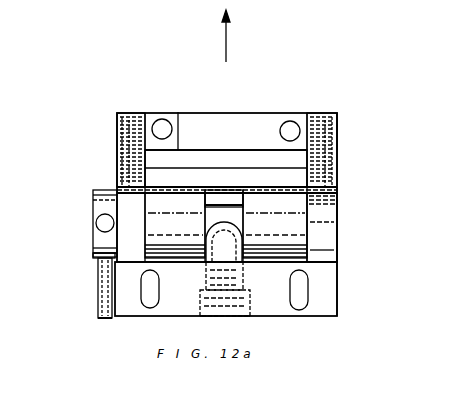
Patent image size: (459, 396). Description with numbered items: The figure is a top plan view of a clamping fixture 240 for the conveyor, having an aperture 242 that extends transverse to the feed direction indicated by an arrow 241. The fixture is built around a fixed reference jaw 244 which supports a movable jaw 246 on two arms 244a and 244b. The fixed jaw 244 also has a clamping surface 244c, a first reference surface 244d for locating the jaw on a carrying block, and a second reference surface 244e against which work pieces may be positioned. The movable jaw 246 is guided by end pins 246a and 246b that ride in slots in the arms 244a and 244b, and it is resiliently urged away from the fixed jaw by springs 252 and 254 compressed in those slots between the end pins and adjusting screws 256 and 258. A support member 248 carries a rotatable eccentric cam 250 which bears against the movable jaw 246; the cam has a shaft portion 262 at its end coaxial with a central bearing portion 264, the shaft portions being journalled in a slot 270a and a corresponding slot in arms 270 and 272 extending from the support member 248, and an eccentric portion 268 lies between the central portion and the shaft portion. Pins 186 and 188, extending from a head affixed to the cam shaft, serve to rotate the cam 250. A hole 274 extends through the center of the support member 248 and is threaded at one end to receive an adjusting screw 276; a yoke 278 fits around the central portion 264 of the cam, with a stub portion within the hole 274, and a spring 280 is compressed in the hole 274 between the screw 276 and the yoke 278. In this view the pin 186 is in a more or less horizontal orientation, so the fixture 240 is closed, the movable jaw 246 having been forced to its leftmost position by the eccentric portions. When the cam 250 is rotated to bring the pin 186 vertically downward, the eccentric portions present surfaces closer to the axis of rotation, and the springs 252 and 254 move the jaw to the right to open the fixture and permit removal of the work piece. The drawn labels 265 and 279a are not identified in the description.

The arrow 241 is at (226, 40).
The fixed reference jaw 244 is at (178, 112).
The arm 244a is at (117, 190).
The arm 244b is at (338, 190).
The clamping surface 244c is at (183, 150).
The first reference surface 244d is at (339, 118).
The second reference surface 244e is at (277, 112).
The aperture 242 is at (206, 124).
The movable jaw 246 is at (236, 150).
The end pin 246a is at (113, 178).
The end pin 246b is at (338, 178).
The adjusting screw 256 is at (134, 112).
The adjusting screw 258 is at (317, 112).
The spring 252 is at (116, 140).
The spring 254 is at (340, 148).
The central bearing portion 264 is at (225, 192).
The shaft portion 262 is at (224, 198).
The eccentric portion 268 is at (175, 225).
The right block 265 is at (275, 225).
The eccentric cam 250 is at (338, 232).
The arm 272 is at (327, 250).
The pin 188 is at (97, 222).
The slot 270a is at (96, 253).
The arm 270 is at (118, 262).
The pin 186 is at (98, 312).
The support member 248 is at (138, 320).
The clamping fixture 240 is at (300, 321).
The spring 280 is at (325, 263).
The yoke 278 is at (240, 258).
The hole 274 is at (206, 276).
The lower insert 279a is at (243, 284).
The adjusting screw 276 is at (215, 316).